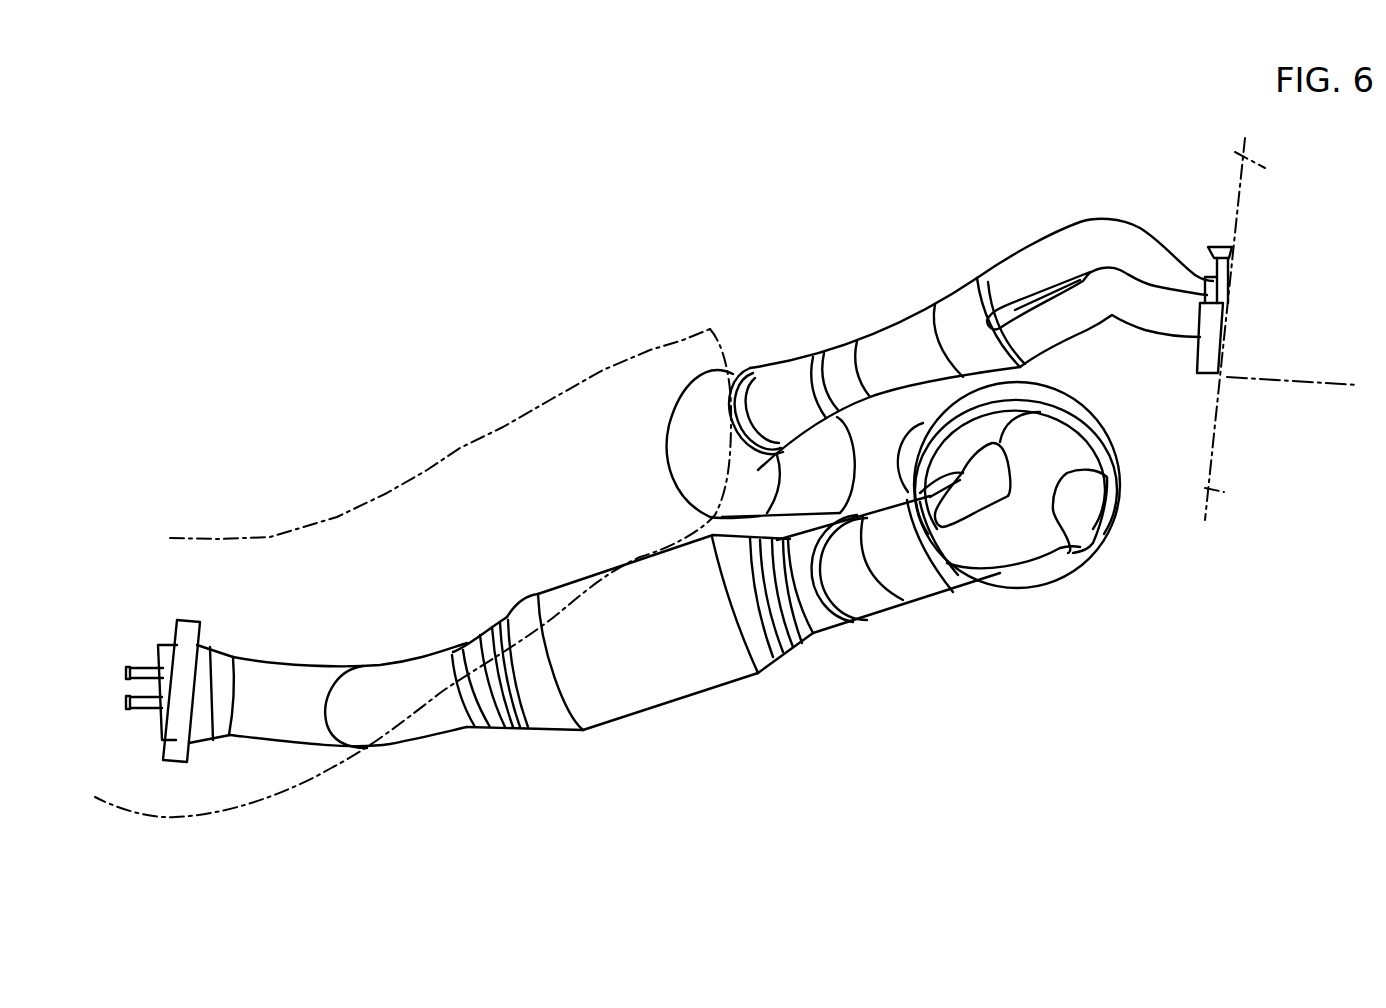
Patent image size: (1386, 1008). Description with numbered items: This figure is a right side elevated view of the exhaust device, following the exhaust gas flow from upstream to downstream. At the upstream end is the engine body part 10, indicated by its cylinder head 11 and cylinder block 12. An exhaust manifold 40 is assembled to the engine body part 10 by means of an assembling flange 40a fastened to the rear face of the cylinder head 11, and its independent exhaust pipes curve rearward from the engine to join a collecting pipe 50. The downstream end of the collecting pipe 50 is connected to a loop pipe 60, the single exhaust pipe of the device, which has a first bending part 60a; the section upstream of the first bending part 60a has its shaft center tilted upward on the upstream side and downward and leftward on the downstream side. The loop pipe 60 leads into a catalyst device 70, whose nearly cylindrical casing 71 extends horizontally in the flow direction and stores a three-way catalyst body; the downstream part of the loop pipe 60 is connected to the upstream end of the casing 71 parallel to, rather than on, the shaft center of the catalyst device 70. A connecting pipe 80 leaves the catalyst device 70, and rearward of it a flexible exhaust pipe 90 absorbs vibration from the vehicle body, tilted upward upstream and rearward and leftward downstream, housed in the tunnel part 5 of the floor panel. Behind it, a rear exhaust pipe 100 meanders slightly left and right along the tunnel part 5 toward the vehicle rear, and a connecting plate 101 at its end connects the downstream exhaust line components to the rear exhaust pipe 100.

The tunnel part 5 is at (463, 473).
The engine body part 10 is at (1225, 329).
The cylinder head 11 is at (1235, 152).
The cylinder block 12 is at (1217, 492).
The exhaust manifold 40 is at (1058, 220).
The assembling flange 40a is at (1223, 246).
The collecting pipe 50 is at (898, 316).
The loop pipe 60 is at (818, 458).
The first bending part 60a is at (692, 445).
The catalyst device 70 is at (1087, 396).
The casing 71 is at (1113, 437).
The connecting pipe 80 is at (927, 587).
The flexible exhaust pipe 90 is at (677, 685).
The rear exhaust pipe 100 is at (370, 765).
The connecting plate 101 is at (177, 763).